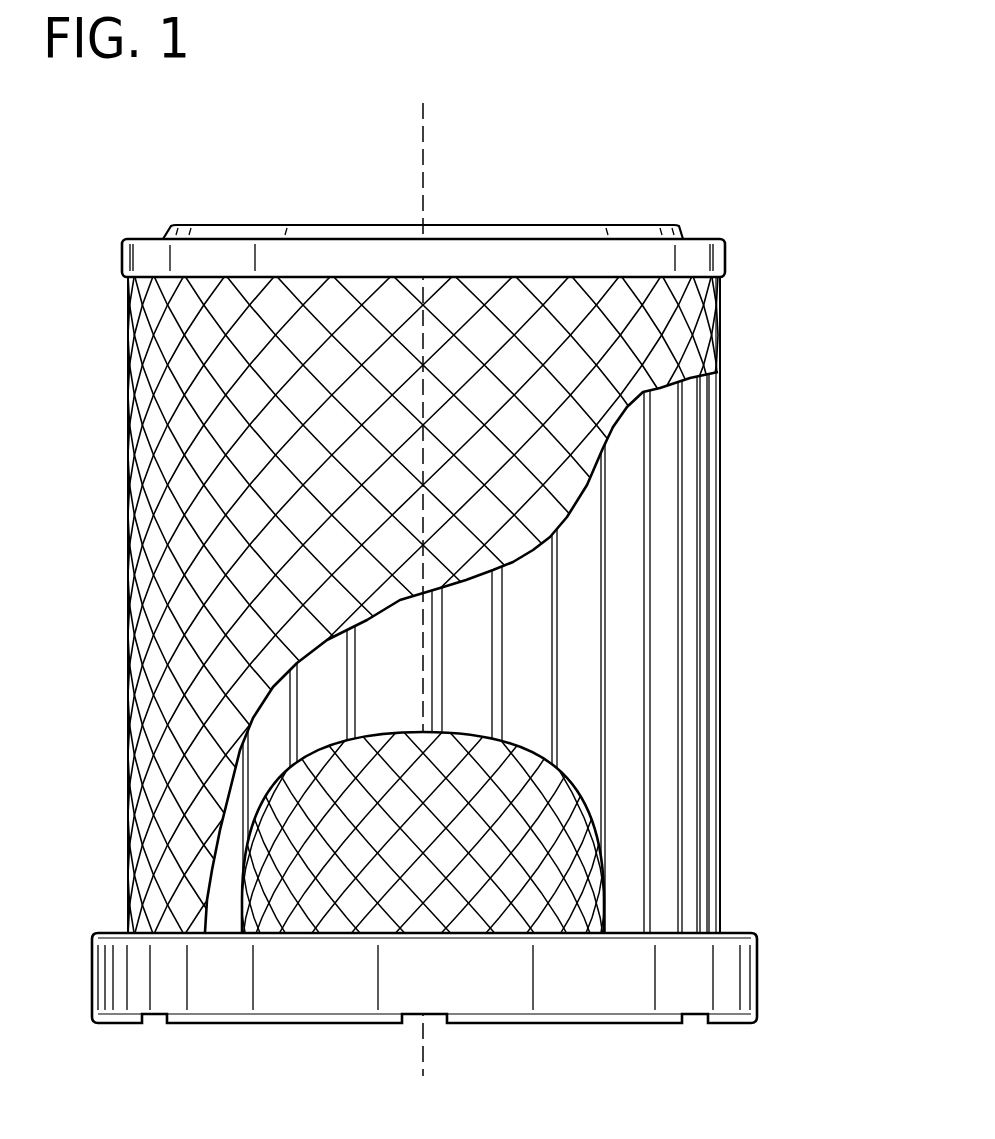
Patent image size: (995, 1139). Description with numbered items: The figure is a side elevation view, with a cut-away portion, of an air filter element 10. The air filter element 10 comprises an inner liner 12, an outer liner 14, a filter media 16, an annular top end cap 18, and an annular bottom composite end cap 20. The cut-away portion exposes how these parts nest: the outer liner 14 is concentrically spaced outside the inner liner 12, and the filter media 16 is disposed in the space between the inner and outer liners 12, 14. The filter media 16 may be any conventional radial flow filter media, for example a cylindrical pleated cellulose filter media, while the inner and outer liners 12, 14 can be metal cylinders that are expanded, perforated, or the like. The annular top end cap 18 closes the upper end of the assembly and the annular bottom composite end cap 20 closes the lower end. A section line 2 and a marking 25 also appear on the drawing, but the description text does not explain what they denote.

The section line 2- 2 is at (423, 103).
The air filter element 10 is at (803, 115).
The inner liner 12 is at (620, 860).
The outer liner 14 is at (200, 452).
The filter media 16 is at (655, 565).
The annular top end cap 18 is at (727, 263).
The annular bottom composite end cap 20 is at (725, 983).
The outer wall 25 is at (127, 908).